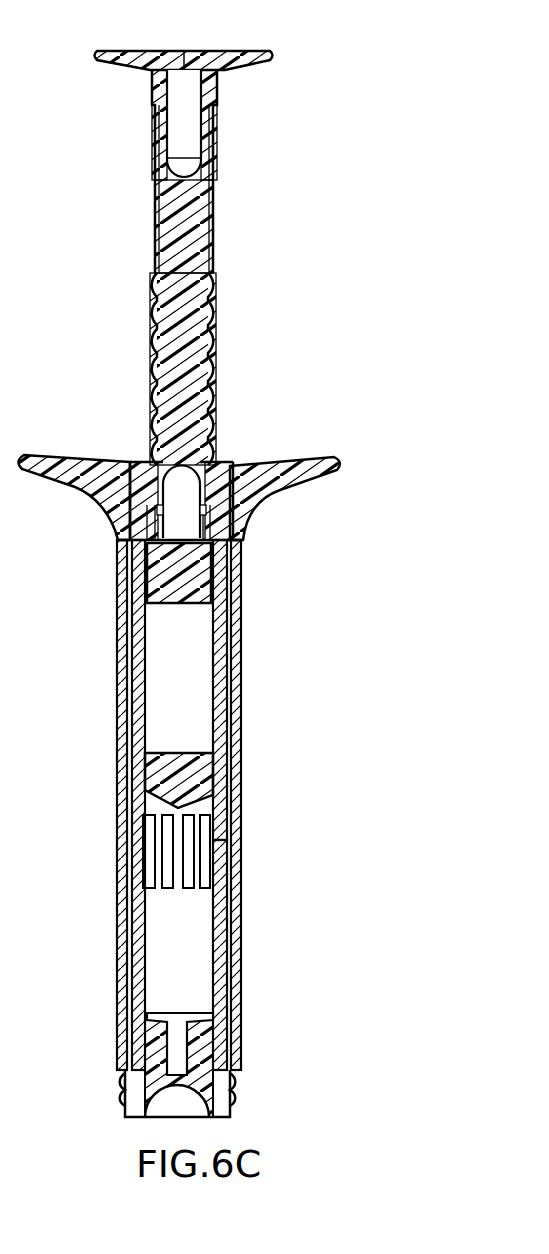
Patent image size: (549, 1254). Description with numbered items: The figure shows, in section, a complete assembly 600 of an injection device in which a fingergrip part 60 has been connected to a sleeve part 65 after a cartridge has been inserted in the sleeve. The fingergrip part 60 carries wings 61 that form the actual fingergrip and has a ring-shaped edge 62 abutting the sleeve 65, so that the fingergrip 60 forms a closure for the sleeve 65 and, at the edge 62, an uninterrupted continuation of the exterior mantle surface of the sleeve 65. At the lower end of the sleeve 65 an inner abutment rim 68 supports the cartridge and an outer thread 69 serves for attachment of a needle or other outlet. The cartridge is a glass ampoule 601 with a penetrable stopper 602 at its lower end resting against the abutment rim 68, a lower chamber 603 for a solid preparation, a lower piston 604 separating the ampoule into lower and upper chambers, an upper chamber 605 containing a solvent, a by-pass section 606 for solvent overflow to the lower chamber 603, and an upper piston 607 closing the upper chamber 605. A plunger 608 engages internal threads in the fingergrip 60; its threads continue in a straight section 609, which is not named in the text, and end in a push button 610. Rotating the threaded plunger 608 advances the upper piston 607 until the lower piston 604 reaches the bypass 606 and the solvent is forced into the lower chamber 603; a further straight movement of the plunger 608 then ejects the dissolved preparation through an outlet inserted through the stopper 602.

The complete assembly 600 is at (178, 566).
The push button 610 is at (258, 58).
The plunger rod 609 is at (215, 212).
The plunger 608 is at (212, 323).
The fingergrip part 60 is at (125, 512).
The wings 61 is at (291, 467).
The ring-shaped edge 62 is at (128, 604).
The sleeve part 65 is at (240, 705).
The upper piston 607 is at (205, 568).
The upper chamber 605 is at (212, 645).
The lower piston 604 is at (198, 756).
The by-pass section 606 is at (190, 855).
The lower chamber 603 is at (155, 928).
The glass ampoule 601 is at (222, 912).
The penetrable stopper 602 is at (160, 1058).
The outer thread 69 is at (122, 1097).
The inner abutment rim 68 is at (233, 1096).